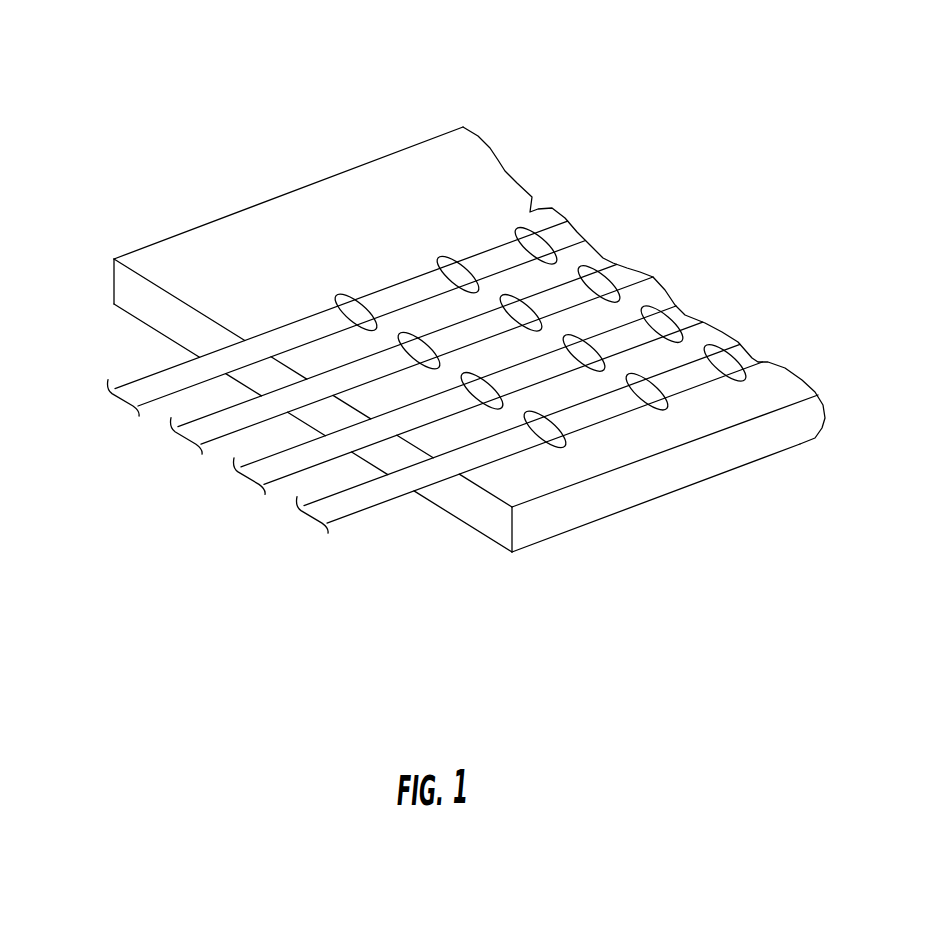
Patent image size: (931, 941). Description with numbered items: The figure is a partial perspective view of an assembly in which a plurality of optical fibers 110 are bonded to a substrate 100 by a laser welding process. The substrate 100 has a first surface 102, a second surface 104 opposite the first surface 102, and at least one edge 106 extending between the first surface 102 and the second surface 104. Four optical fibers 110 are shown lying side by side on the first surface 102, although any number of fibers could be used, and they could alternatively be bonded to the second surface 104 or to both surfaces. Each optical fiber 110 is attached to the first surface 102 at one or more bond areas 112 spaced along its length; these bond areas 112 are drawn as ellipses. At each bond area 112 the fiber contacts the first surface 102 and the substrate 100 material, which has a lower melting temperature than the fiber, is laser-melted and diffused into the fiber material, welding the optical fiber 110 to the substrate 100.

The substrate 100 is at (208, 86).
The first surface 102 is at (417, 174).
The second surface 104 is at (548, 549).
The edge 106 is at (122, 292).
The optical fibers 110 is at (288, 566).
The bond areas 112 is at (342, 303).